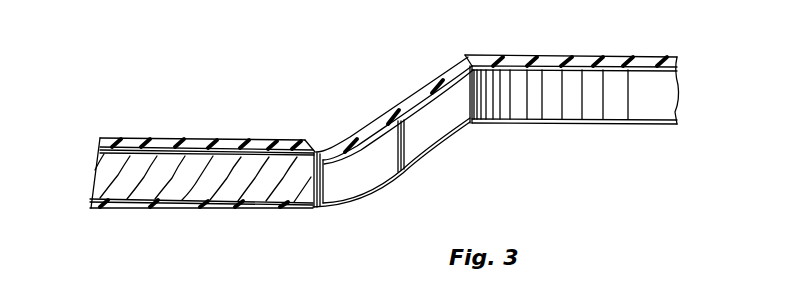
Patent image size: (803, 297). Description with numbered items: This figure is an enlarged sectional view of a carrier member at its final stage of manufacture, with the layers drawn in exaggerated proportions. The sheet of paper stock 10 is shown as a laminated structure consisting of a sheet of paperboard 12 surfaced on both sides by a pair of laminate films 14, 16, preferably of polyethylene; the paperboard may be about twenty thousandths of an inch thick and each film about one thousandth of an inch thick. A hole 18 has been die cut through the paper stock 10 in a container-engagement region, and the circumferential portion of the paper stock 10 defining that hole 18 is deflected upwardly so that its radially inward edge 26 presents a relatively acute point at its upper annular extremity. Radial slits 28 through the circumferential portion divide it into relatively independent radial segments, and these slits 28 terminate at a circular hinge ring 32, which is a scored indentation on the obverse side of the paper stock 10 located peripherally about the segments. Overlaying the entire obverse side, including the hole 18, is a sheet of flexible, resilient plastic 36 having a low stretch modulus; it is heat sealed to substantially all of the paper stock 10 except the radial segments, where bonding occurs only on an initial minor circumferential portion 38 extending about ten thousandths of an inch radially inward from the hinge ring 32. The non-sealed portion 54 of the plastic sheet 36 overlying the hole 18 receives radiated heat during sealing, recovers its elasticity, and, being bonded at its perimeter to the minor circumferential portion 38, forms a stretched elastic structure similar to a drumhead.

The sheet of paper stock 10 is at (177, 169).
The sheet of paperboard 12 is at (93, 175).
The laminate film 14 is at (90, 206).
The laminate film 16 is at (93, 149).
The hole 18 is at (572, 109).
The radially inward edge 26 is at (478, 94).
The radial slit 28 is at (372, 167).
The hinge ring 32 is at (313, 150).
The sheet of plastic 36 is at (197, 137).
The minor circumferential portion 38 is at (347, 145).
The non-sealed portion of the plastic sheet 54 is at (408, 96).